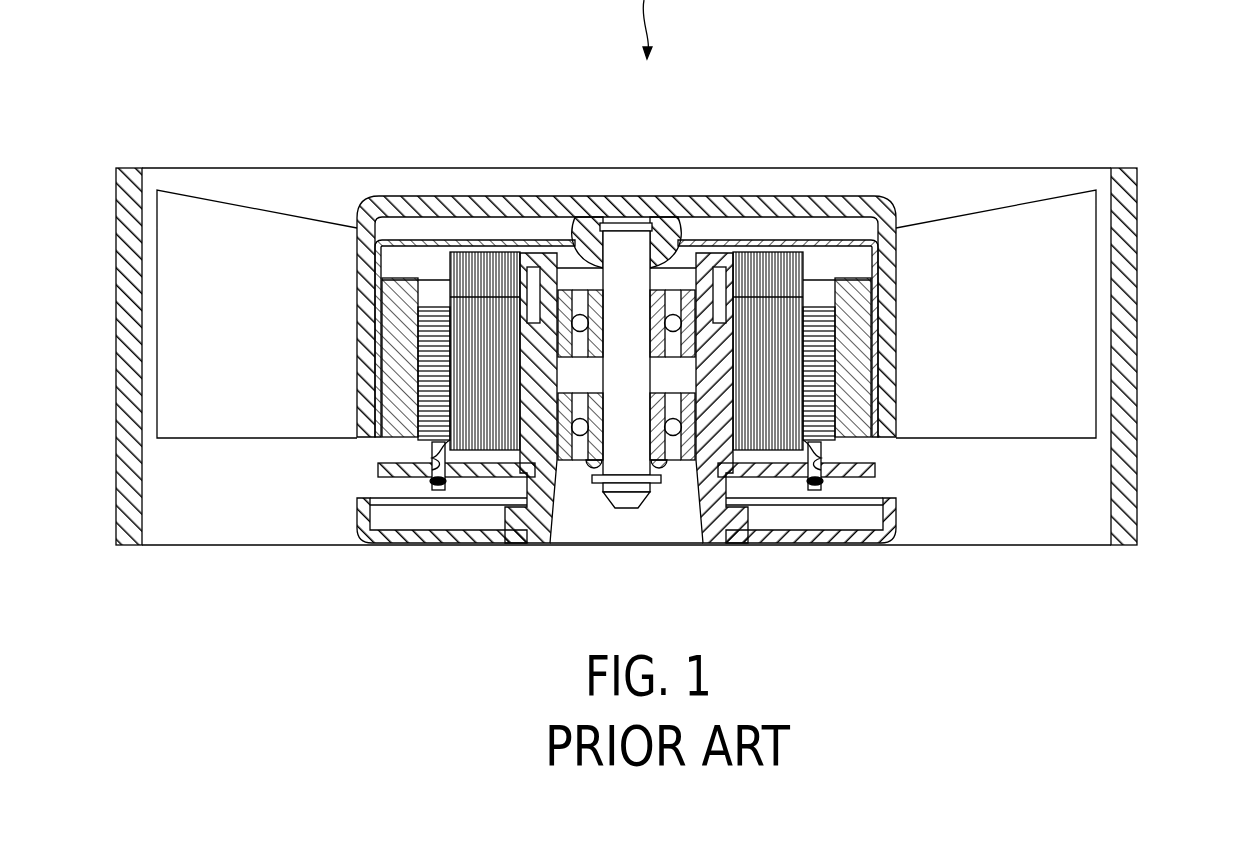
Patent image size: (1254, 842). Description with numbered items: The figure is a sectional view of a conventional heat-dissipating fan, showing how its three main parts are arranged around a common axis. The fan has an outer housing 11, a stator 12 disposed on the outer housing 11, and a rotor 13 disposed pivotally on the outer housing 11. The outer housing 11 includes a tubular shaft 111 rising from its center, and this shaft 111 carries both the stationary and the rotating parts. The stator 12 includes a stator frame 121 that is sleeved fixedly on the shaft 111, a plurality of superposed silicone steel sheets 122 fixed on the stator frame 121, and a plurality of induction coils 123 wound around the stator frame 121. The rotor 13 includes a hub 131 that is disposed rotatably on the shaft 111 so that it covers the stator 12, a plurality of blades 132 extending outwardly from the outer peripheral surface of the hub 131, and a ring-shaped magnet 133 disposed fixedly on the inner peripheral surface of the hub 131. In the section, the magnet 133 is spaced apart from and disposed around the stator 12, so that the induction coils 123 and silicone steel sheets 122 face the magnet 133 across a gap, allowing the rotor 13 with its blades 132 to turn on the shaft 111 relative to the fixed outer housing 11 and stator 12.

The outer housing 11 is at (1150, 331).
The tubular shaft 111 is at (736, 493).
The stator 12 is at (426, 240).
The stator frame 121 is at (515, 462).
The superposed silicone steel sheets 122 is at (827, 372).
The induction coils 123 is at (780, 250).
The rotor 13 is at (596, 188).
The hub 131 is at (858, 200).
The blades 132 is at (262, 227).
The ring-shaped magnet 133 is at (893, 295).